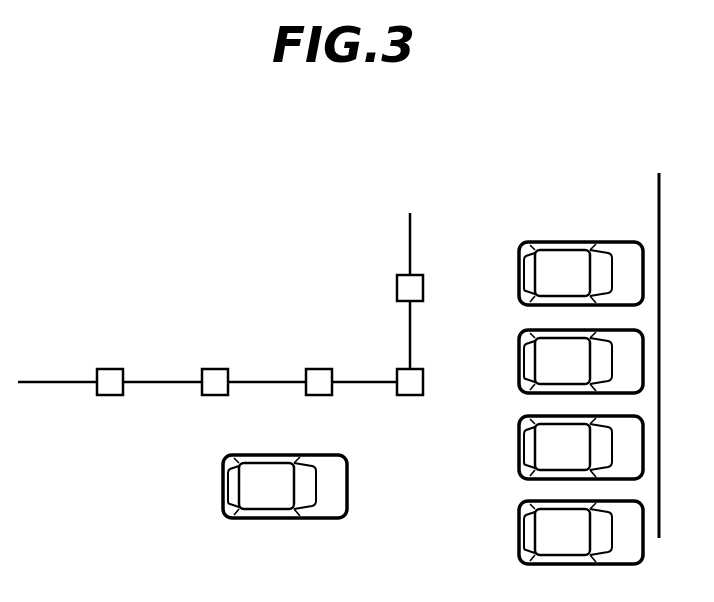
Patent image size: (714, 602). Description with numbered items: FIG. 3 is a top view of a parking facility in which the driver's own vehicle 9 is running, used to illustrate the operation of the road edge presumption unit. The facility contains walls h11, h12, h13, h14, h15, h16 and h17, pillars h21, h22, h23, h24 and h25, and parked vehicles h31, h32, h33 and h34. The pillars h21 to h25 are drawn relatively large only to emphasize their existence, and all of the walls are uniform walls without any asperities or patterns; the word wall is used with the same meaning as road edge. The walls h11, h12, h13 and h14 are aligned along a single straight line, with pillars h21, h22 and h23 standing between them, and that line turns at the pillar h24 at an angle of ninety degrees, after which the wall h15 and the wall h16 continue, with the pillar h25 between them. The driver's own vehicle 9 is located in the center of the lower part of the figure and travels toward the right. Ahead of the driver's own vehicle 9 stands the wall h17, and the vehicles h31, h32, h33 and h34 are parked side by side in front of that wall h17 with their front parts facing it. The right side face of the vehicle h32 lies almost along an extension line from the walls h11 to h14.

The wall h11 is at (38, 381).
The wall h12 is at (152, 381).
The wall h13 is at (252, 381).
The wall h14 is at (340, 381).
The wall h15 is at (410, 332).
The wall h16 is at (410, 233).
The wall h17 is at (659, 230).
The pillar h21 is at (118, 396).
The pillar h22 is at (222, 396).
The pillar h23 is at (318, 396).
The pillar h24 is at (405, 396).
The pillar h25 is at (424, 290).
The vehicle h31 is at (519, 277).
The vehicle h32 is at (519, 383).
The vehicle h33 is at (519, 430).
The vehicle h34 is at (519, 528).
The driver's own vehicle 9 is at (220, 505).